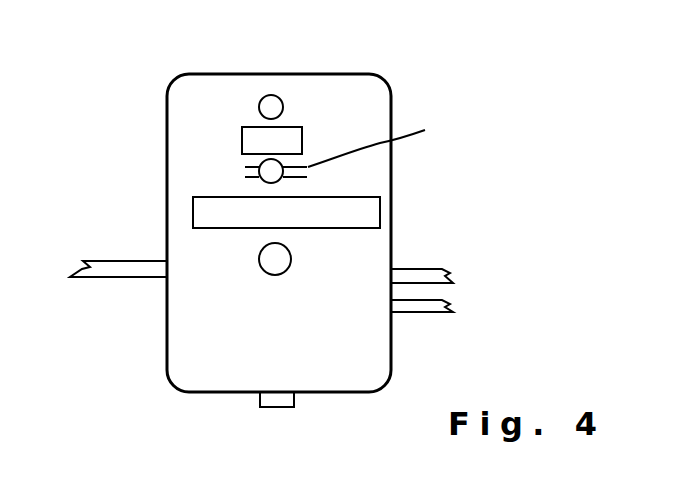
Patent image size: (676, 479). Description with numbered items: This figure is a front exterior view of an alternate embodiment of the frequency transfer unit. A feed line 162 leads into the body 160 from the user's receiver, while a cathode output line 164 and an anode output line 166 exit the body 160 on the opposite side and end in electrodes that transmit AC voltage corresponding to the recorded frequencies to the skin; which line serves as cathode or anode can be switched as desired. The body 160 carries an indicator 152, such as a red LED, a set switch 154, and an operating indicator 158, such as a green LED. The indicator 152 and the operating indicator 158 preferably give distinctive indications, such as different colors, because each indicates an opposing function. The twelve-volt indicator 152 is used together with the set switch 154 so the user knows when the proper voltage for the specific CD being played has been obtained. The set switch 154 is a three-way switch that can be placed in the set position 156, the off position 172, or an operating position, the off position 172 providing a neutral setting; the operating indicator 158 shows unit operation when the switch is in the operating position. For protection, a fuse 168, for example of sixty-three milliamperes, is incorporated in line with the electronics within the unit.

The indicator 152 is at (283, 100).
The set switch 154 is at (379, 197).
The set position 156 is at (302, 128).
The operating indicator 158 is at (273, 268).
The body 160 is at (373, 362).
The feed line 162 is at (100, 270).
The cathode output line 164 is at (445, 308).
The anode output line 166 is at (438, 265).
The fuse 168 is at (272, 398).
The off position 172 is at (245, 167).